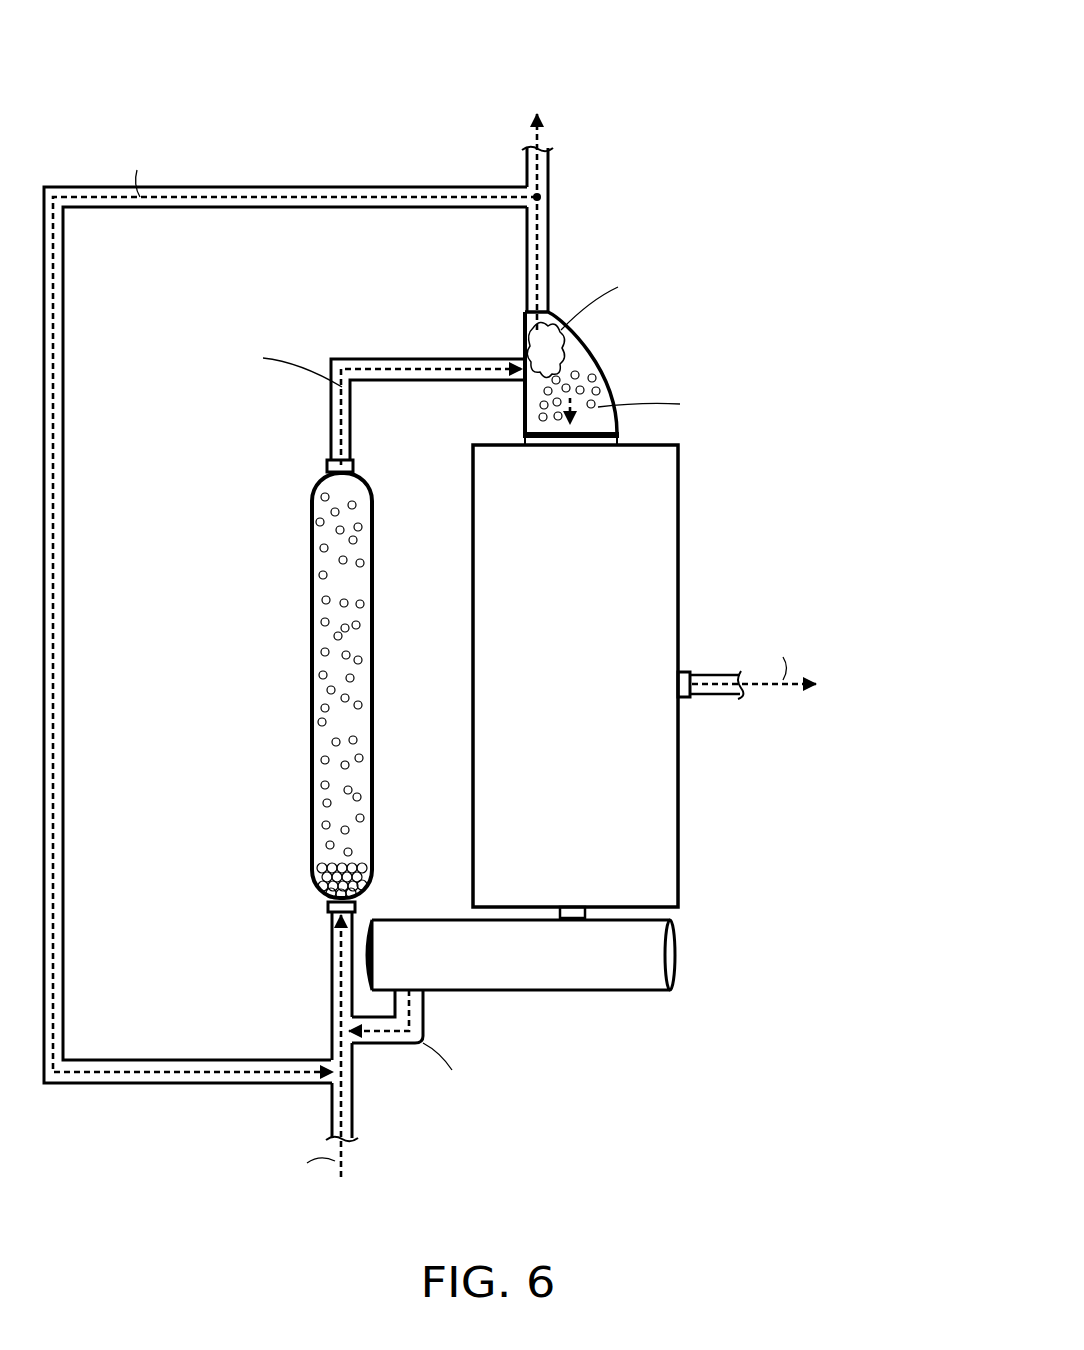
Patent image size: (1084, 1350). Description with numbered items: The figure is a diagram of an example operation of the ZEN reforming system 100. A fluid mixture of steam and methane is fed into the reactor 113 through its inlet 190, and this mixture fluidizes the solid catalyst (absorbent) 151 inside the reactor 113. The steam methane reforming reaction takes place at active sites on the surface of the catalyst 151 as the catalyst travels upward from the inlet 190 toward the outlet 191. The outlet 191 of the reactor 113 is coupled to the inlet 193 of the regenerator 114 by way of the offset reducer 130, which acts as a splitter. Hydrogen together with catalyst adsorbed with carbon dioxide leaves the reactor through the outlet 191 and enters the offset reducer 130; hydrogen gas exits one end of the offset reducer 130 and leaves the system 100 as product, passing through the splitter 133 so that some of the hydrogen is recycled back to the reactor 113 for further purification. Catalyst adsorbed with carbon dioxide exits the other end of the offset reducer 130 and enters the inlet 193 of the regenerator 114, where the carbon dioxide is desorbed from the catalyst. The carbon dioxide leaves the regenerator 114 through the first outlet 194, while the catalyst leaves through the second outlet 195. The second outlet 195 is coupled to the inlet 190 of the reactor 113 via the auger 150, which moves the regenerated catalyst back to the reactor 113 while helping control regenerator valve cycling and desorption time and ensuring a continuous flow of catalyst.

The ZEN reforming system 100 is at (813, 99).
The splitter 133 is at (557, 191).
The offset reducer 130 is at (608, 357).
The inlet 193 is at (523, 437).
The regenerator 114 is at (575, 676).
The first outlet 194 is at (689, 697).
The second outlet 195 is at (587, 912).
The auger 150 is at (512, 1033).
The reactor 113 is at (312, 660).
The outlet 191 is at (327, 465).
The inlet 190 is at (327, 907).
The catalyst (absorbent) 151 is at (330, 843).